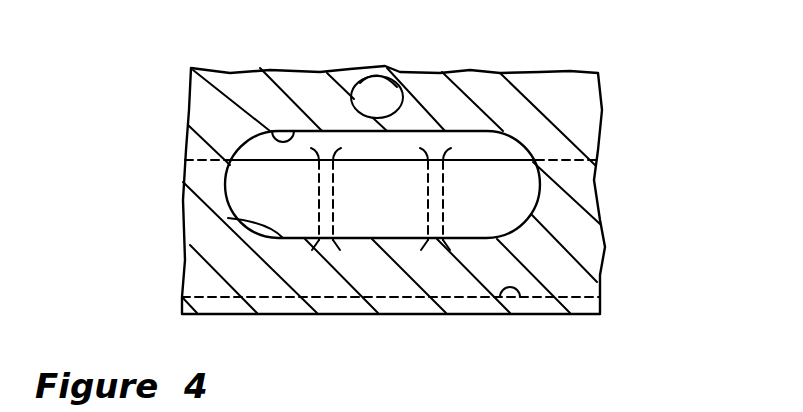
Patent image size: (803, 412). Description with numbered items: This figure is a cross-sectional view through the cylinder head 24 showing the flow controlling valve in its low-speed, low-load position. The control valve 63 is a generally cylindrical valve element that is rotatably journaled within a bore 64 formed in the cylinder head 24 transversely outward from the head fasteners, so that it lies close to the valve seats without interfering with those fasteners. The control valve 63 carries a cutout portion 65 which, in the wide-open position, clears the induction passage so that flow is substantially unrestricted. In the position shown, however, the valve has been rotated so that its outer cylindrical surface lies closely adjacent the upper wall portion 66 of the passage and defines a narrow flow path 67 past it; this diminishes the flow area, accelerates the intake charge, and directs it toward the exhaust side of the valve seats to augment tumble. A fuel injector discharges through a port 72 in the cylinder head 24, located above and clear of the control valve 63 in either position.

The cylinder head 24 is at (570, 207).
The control valve 63 is at (263, 182).
The bore 64 is at (523, 302).
The cutout portion 65 is at (230, 218).
The upper wall portion 66 is at (270, 130).
The narrow flow path 67 is at (403, 148).
The port 72 is at (360, 77).